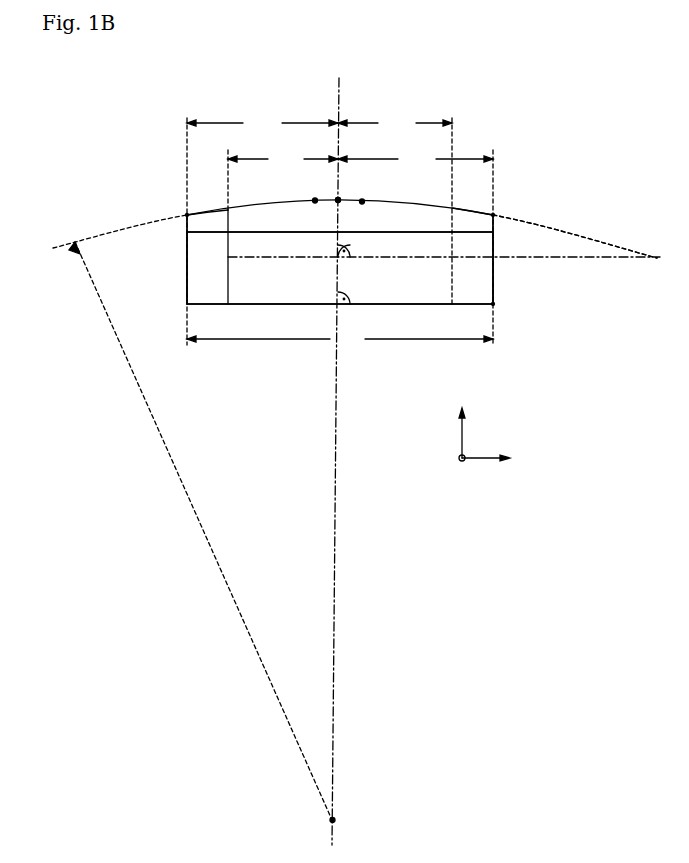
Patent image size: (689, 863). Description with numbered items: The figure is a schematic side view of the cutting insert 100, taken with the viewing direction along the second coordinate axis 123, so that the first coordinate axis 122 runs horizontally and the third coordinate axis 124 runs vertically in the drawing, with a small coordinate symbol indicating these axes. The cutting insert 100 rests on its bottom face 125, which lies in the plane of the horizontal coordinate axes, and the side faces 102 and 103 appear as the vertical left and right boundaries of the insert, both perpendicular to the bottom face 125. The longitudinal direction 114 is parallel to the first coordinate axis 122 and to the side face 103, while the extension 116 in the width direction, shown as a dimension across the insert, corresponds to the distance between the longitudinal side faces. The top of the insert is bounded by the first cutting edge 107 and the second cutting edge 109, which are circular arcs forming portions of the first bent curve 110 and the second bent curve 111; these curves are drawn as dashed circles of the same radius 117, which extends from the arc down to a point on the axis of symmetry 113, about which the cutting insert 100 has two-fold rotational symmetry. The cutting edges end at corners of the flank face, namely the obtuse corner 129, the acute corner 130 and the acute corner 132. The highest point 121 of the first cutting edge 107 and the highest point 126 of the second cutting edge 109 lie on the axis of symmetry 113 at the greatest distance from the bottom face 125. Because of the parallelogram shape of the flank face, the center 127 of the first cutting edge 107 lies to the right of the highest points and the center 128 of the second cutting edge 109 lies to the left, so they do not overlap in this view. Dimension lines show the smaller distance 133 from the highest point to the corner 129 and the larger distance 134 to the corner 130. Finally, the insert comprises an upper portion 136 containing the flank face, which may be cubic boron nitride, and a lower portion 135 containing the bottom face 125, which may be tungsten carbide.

The cutting insert 100 is at (76, 106).
The side face 102 is at (195, 282).
The side face 103 is at (495, 288).
The first cutting edge 107 is at (478, 211).
The second cutting edge 109 is at (206, 211).
The first bent curve 110 is at (562, 229).
The second bent curve 111 is at (575, 236).
The axis of symmetry 113 is at (334, 742).
The longitudinal direction 114 is at (572, 259).
The extension in the width direction 116 is at (340, 339).
The radius 117 is at (218, 563).
The highest point of the first cutting edge 121 is at (339, 198).
The first coordinate axis 122 is at (482, 462).
The second coordinate axis 123 is at (459, 458).
The third coordinate axis 124 is at (460, 432).
The bottom face 125 is at (480, 305).
The highest point of the second cutting edge 126 is at (338, 200).
The center of the first cutting edge 127 is at (364, 201).
The center of the second cutting edge 128 is at (314, 200).
The corner 129 is at (227, 209).
The corner 130 is at (496, 215).
The corner 132 is at (186, 214).
The distance 133 is at (360, 230).
The distance 134 is at (340, 230).
The lower portion 135 is at (310, 286).
The upper portion 136 is at (310, 223).